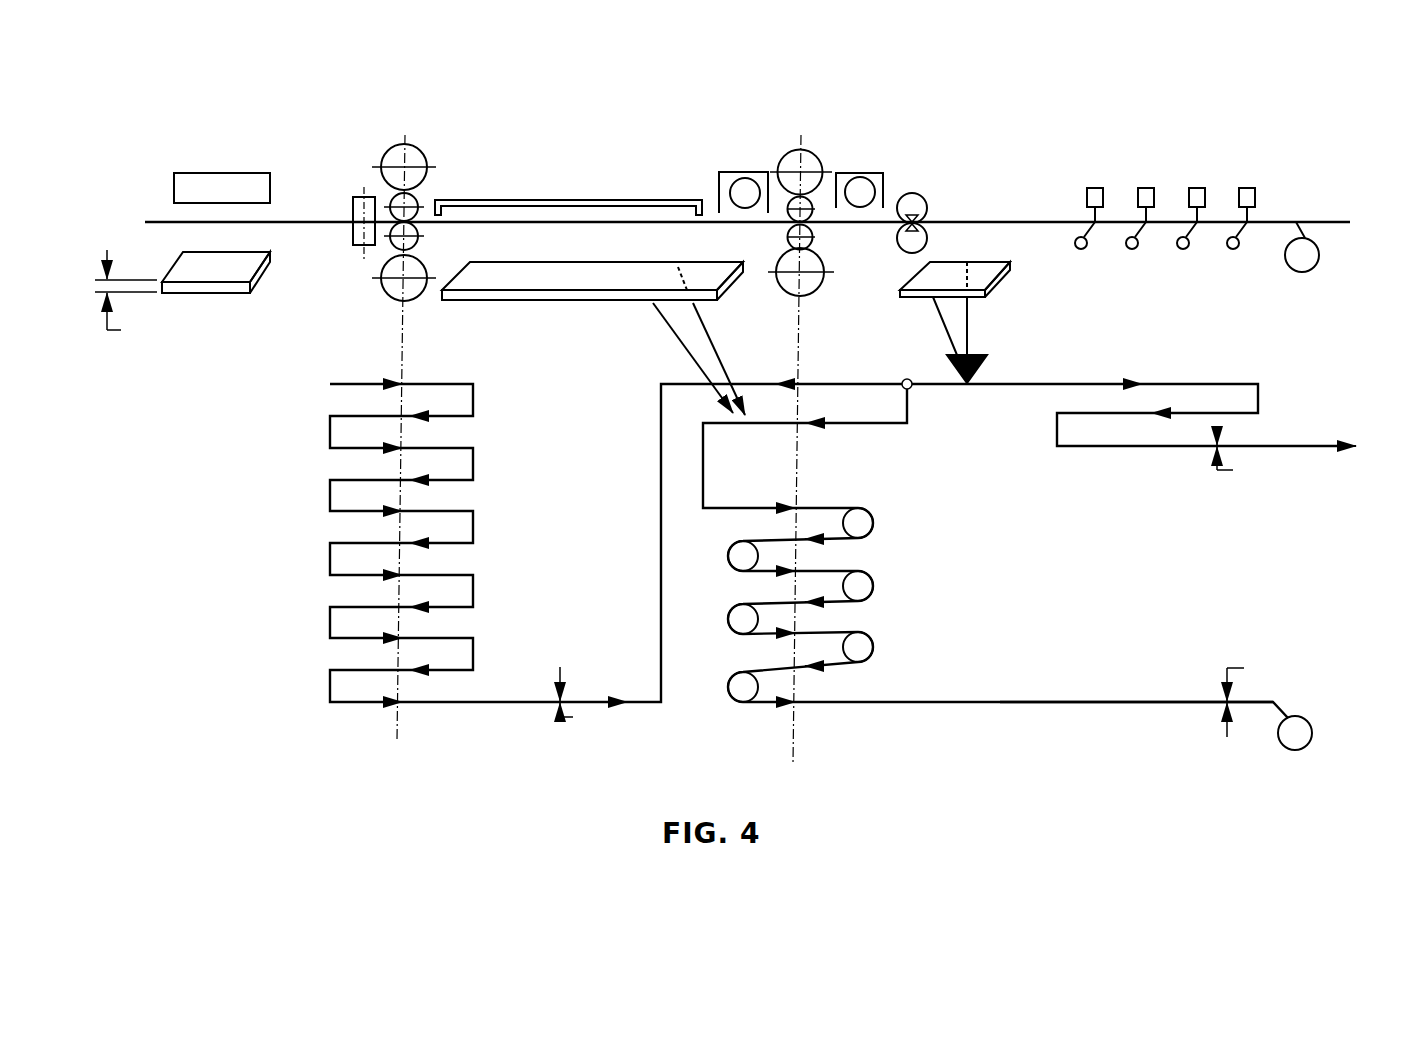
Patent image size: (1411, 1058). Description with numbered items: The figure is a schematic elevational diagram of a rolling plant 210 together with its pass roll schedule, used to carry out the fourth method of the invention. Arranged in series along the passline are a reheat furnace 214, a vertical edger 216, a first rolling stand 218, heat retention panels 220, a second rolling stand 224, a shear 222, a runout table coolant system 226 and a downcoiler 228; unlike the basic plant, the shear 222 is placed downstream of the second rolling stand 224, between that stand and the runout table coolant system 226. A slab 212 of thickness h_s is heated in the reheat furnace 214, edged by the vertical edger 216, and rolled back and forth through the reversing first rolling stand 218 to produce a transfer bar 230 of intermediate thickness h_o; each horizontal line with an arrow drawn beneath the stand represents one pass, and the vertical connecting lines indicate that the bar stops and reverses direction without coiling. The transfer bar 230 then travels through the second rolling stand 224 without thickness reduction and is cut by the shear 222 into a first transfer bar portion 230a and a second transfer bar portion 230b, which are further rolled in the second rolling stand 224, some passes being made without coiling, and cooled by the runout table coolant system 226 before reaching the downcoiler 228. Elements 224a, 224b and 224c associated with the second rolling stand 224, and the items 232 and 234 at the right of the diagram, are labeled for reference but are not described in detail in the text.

The rolling plant 210 is at (654, 106).
The slab 212 is at (205, 288).
The reheat furnace 214 is at (228, 180).
The vertical edger 216 is at (356, 205).
The first rolling stand 218 is at (392, 162).
The heat retention panels 220 is at (572, 200).
The shear 222 is at (915, 198).
The second rolling stand 224 is at (774, 156).
The laminating roll stack 224a is at (799, 150).
The first supply roll 224b is at (740, 193).
The second supply roll 224c is at (858, 185).
The runout table coolant system 226 is at (1140, 173).
The downcoiler 228 is at (1304, 272).
The transfer bar 230 is at (895, 299).
The first transfer bar portion 230a is at (605, 275).
The second transfer bar portion 230b is at (940, 272).
The finished web 232 is at (1025, 702).
The output web path 234 is at (1262, 446).